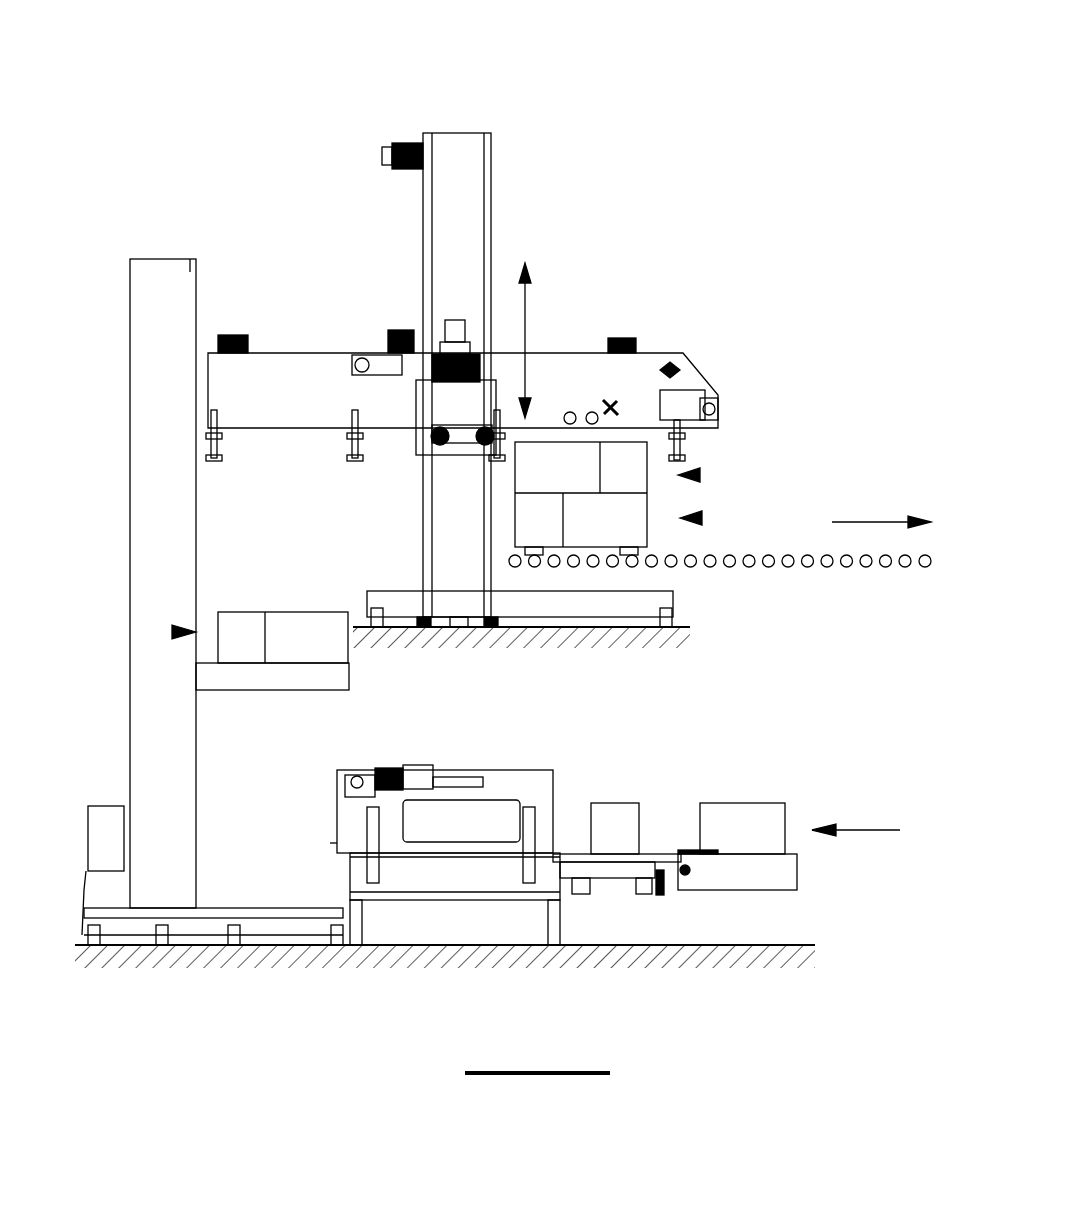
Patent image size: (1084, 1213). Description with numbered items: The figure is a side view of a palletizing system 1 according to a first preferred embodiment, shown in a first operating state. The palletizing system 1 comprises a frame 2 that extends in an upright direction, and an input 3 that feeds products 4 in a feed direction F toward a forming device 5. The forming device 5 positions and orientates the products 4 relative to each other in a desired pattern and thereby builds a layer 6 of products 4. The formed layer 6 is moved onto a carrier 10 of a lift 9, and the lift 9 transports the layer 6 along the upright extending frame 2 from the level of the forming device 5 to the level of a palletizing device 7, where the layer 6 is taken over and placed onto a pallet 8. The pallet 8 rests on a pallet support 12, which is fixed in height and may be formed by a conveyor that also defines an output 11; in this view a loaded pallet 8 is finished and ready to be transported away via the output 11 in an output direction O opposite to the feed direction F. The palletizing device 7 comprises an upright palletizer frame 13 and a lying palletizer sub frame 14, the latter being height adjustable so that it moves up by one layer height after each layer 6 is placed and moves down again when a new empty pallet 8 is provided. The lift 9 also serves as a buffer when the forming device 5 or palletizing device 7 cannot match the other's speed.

The palletizing system 1 is at (708, 128).
The frame 2 is at (153, 205).
The input 3 is at (735, 890).
The products 4 is at (245, 630).
The forming device 5 is at (487, 752).
The layer 6 is at (700, 475).
The palletizing device 7 is at (347, 170).
The pallet 8 is at (647, 553).
The lift 9 is at (150, 480).
The carrier 10 is at (258, 676).
The output 11 is at (847, 568).
The pallet support 12 is at (566, 585).
The upright palletizer frame 13 is at (462, 208).
The lying palletizer sub frame 14 is at (556, 375).